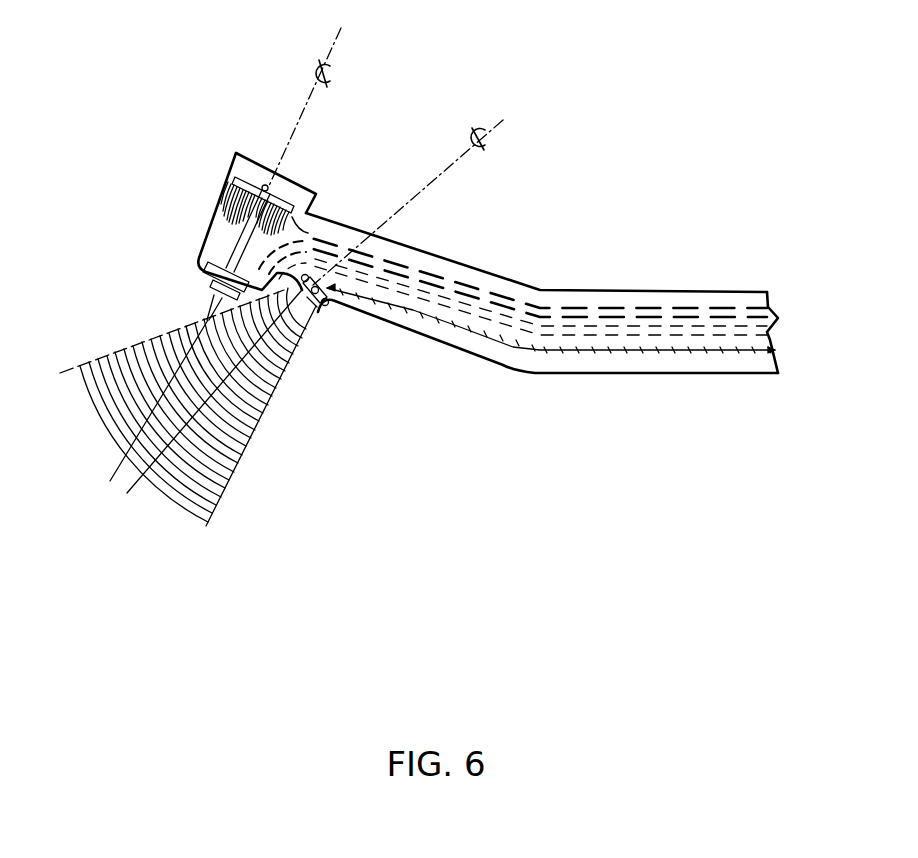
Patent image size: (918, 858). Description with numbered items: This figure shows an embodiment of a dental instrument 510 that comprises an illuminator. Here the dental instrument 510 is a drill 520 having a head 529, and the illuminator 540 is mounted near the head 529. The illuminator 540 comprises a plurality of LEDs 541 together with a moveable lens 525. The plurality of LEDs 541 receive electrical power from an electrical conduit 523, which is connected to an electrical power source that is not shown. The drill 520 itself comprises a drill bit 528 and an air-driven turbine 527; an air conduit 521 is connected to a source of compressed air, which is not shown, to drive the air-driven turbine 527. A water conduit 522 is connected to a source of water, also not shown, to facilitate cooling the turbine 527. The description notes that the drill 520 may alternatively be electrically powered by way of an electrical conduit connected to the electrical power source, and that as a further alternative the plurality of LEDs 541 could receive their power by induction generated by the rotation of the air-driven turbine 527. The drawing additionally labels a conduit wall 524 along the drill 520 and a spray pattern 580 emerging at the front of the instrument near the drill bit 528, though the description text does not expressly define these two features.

The dental instrument 510 is at (545, 166).
The drill 520 is at (466, 416).
The air conduit 521 is at (625, 315).
The water conduit 522 is at (655, 332).
The electrical conduit 523 is at (735, 352).
The conduit wall 524 is at (582, 375).
The moveable lens 525 is at (337, 310).
The air-driven turbine 527 is at (224, 192).
The drill bit 528 is at (212, 298).
The head 529 is at (236, 154).
The illuminator 540 is at (322, 322).
The plurality of LEDs 541 is at (317, 277).
The spray pattern 580 is at (233, 487).